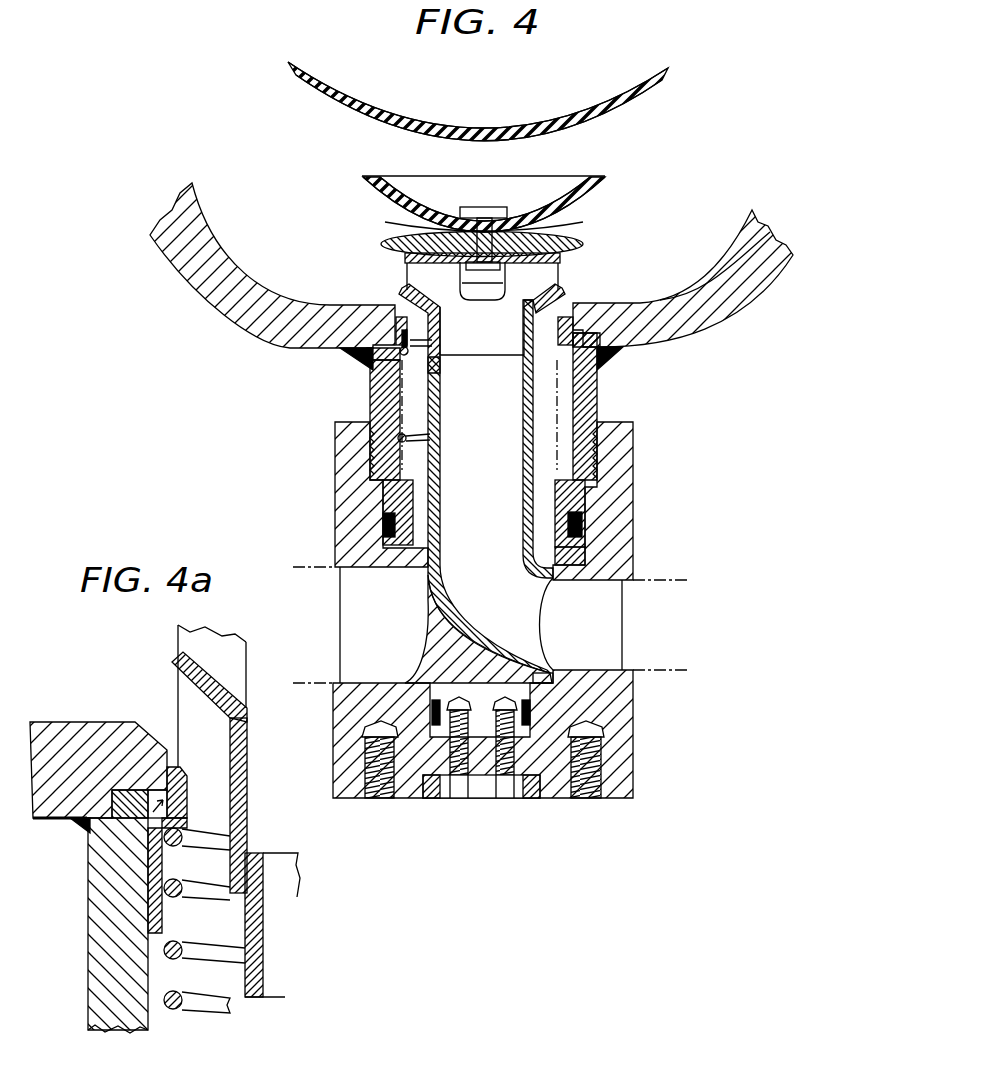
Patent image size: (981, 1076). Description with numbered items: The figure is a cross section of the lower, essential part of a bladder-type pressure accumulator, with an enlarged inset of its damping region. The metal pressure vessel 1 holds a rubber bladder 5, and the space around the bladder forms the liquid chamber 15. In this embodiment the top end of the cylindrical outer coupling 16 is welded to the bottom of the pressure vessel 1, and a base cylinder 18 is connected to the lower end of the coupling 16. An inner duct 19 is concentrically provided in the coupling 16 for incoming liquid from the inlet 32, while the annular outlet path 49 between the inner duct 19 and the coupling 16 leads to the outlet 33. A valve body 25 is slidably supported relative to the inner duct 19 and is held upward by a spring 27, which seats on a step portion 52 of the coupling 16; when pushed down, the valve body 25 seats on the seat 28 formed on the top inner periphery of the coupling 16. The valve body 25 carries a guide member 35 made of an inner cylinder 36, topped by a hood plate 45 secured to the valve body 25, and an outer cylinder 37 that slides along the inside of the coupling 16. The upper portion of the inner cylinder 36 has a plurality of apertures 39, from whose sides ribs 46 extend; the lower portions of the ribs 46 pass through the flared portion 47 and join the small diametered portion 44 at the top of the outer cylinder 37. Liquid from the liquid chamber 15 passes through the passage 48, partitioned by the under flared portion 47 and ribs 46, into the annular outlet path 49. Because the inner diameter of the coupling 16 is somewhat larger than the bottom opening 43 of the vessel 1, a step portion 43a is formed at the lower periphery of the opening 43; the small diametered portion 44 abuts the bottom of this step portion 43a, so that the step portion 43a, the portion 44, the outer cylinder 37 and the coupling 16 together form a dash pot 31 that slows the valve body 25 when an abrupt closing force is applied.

In FIG. 4, the pressure vessel 1 is at (737, 312).
In FIG. 4a, the pressure vessel 1 is at (48, 730).
In FIG. 4, the bladder 5 is at (648, 92).
In FIG. 4, the liquid chamber 15 is at (240, 243).
In FIG. 4, the cylindrical coupling 16 is at (593, 450).
In FIG. 4a, the cylindrical coupling 16 is at (100, 993).
In FIG. 4, the base cylinder 18 is at (620, 733).
In FIG. 4, the inner duct 19 is at (583, 505).
In FIG. 4a, the inner duct 19 is at (258, 932).
In FIG. 4, the valve body 25 is at (563, 236).
In FIG. 4, the spring 27 is at (523, 430).
In FIG. 4a, the spring 27 is at (205, 1008).
In FIG. 4, the seat 28 is at (578, 306).
In FIG. 4, the dash pot 31 is at (372, 380).
In FIG. 4a, the dash pot 31 is at (152, 822).
In FIG. 4, the inlet 32 is at (600, 598).
In FIG. 4, the outlet 33 is at (372, 588).
In FIG. 4, the guide member 35 is at (583, 273).
In FIG. 4, the inner cylinder 36 is at (598, 372).
In FIG. 4a, the inner cylinder 36 is at (247, 752).
In FIG. 4, the outer cylinder 37 is at (393, 382).
In FIG. 4a, the outer cylinder 37 is at (165, 912).
In FIG. 4, the apertures 39 is at (537, 278).
In FIG. 4, the bottom opening 43 is at (400, 318).
In FIG. 4a, the bottom opening 43 is at (168, 790).
In FIG. 4, the step portion 43a is at (396, 326).
In FIG. 4a, the step portion 43a is at (140, 795).
In FIG. 4, the small diametered portion 44 is at (600, 330).
In FIG. 4a, the small diametered portion 44 is at (187, 792).
In FIG. 4, the hood plate 45 is at (412, 232).
In FIG. 4, the ribs 46 is at (565, 262).
In FIG. 4a, the ribs 46 is at (232, 660).
In FIG. 4, the flared portion 47 is at (403, 290).
In FIG. 4a, the flared portion 47 is at (176, 660).
In FIG. 4, the passage 48 is at (418, 340).
In FIG. 4, the annular outlet path 49 is at (580, 545).
In FIG. 4, the step portion 52 is at (383, 493).